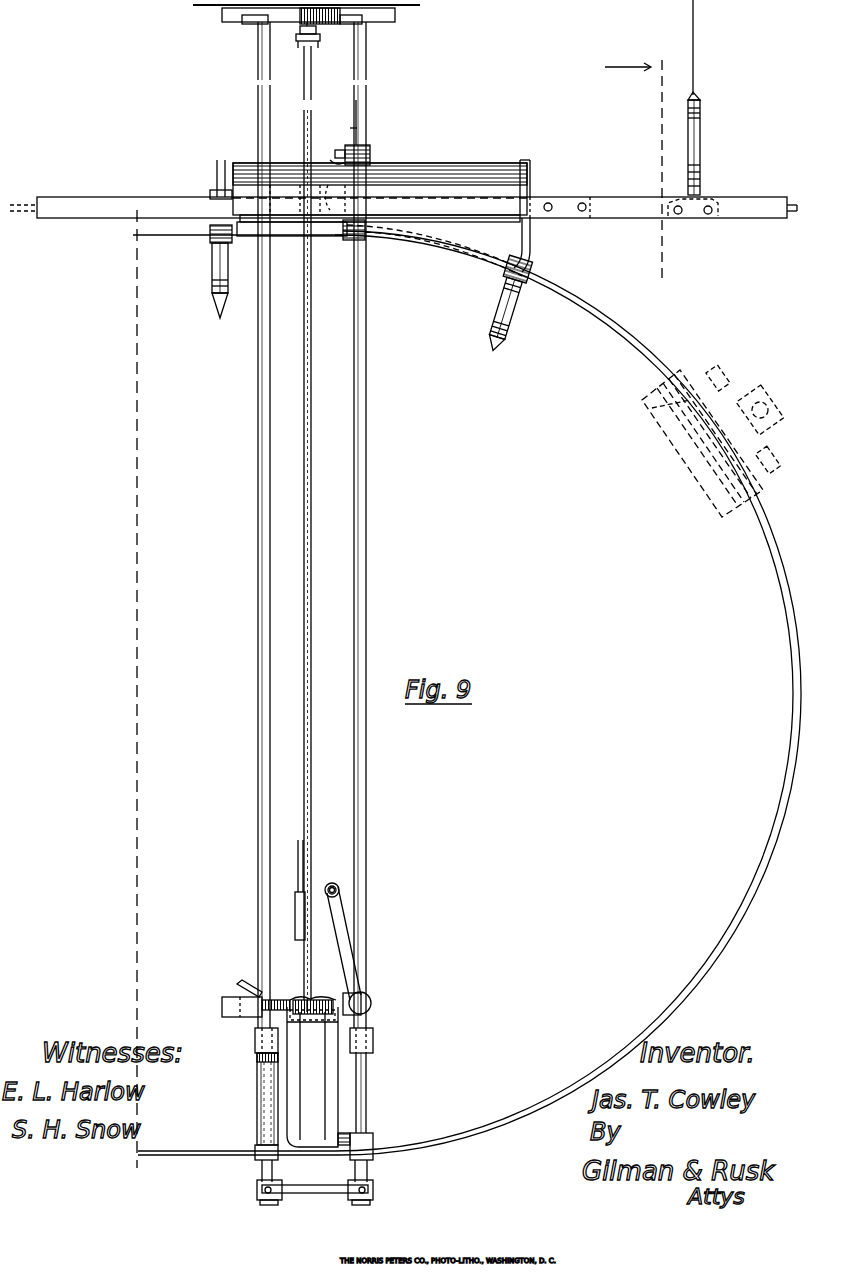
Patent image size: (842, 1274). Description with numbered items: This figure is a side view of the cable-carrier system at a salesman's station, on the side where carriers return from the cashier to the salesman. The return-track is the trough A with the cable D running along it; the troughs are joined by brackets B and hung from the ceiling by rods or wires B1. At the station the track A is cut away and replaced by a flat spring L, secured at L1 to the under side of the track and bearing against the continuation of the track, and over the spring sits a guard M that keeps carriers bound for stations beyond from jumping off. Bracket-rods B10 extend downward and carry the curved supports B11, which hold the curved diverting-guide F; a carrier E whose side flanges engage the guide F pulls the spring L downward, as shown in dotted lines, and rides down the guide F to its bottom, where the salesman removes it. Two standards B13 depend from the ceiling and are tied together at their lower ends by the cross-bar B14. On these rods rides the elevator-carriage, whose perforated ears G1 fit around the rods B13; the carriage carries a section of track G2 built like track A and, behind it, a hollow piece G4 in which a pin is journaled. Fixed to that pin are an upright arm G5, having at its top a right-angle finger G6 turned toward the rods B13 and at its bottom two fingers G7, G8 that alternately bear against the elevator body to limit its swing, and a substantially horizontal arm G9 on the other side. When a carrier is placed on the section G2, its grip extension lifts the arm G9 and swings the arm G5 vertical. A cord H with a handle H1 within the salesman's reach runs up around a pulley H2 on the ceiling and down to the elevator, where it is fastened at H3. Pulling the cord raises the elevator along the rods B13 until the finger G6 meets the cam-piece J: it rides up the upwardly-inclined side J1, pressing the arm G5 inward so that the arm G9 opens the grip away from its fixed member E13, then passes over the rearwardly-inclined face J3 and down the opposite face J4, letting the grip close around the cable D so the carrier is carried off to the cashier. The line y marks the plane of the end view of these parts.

The trough A is at (417, 217).
The cable D is at (23, 198).
The section line y- y is at (132, 686).
The guard M is at (450, 165).
The bracket B is at (701, 143).
The rod or wire B1 is at (693, 34).
The bracket-rod B10 is at (531, 240).
The curved support B11 is at (244, 1110).
The rod or standard B13 is at (258, 58).
The cross-bar B14 is at (316, 1192).
The cord H is at (304, 87).
The handle H1 is at (299, 930).
The pulley H2 is at (314, 42).
The cord attachment point H3 is at (308, 999).
The cam-piece J is at (372, 160).
The upwardly-inclined side of cam-piece J1 is at (322, 166).
The rearwardly-inclined face of cam-piece J3 is at (351, 128).
The opposite face of cam-piece J4 is at (370, 154).
The flat spring L is at (425, 240).
The spring attachment point L1 is at (286, 240).
The carrier E is at (702, 443).
The fixed member of grip E13 is at (699, 419).
The diverting-guide F is at (790, 762).
The perforated ear G1 is at (255, 1041).
The track section G2 is at (222, 1005).
The hollow piece G4 is at (371, 1001).
The upright arm G5 is at (333, 883).
The right-angle finger G6 is at (340, 890).
The finger G7 is at (330, 1000).
The finger G8 is at (330, 1022).
The horizontal arm G9 is at (243, 983).